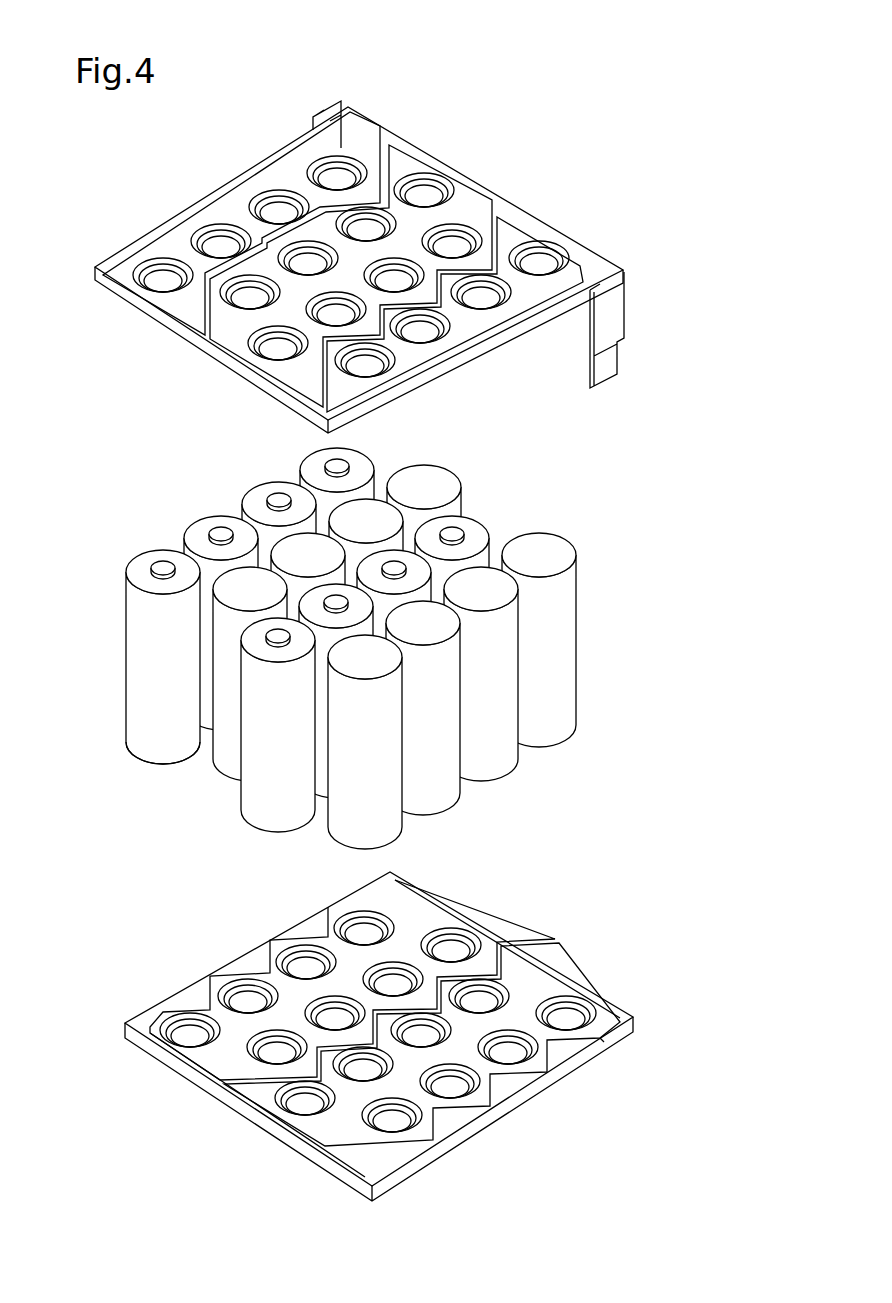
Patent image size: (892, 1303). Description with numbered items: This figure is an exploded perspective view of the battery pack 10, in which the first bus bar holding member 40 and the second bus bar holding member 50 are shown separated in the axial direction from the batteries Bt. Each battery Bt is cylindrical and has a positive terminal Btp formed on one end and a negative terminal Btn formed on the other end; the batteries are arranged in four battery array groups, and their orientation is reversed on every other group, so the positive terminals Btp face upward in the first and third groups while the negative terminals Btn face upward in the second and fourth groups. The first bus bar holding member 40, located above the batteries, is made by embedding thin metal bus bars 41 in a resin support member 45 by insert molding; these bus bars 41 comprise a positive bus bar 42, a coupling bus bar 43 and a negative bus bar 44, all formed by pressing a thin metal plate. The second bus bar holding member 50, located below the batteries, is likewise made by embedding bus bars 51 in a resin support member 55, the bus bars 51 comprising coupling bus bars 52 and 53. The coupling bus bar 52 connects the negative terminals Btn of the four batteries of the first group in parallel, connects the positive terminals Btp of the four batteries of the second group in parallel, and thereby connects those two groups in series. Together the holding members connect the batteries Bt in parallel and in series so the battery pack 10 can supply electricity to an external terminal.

The battery pack 10 is at (578, 50).
The first bus bar holding member 40 is at (548, 70).
The bus bars 41 is at (626, 186).
The positive bus bar 42 is at (355, 134).
The coupling bus bar 43 is at (440, 181).
The negative bus bar 44 is at (556, 216).
The resin support member 45 is at (612, 280).
The battery Bt is at (126, 655).
The positive terminal Btp is at (160, 568).
The negative terminal Btn is at (160, 762).
The second bus bar holding member 50 is at (630, 848).
The bus bars 51 is at (672, 945).
The coupling bus bar 52 is at (493, 936).
The coupling bus bar 53 is at (556, 987).
The resin support member 55 is at (578, 1072).